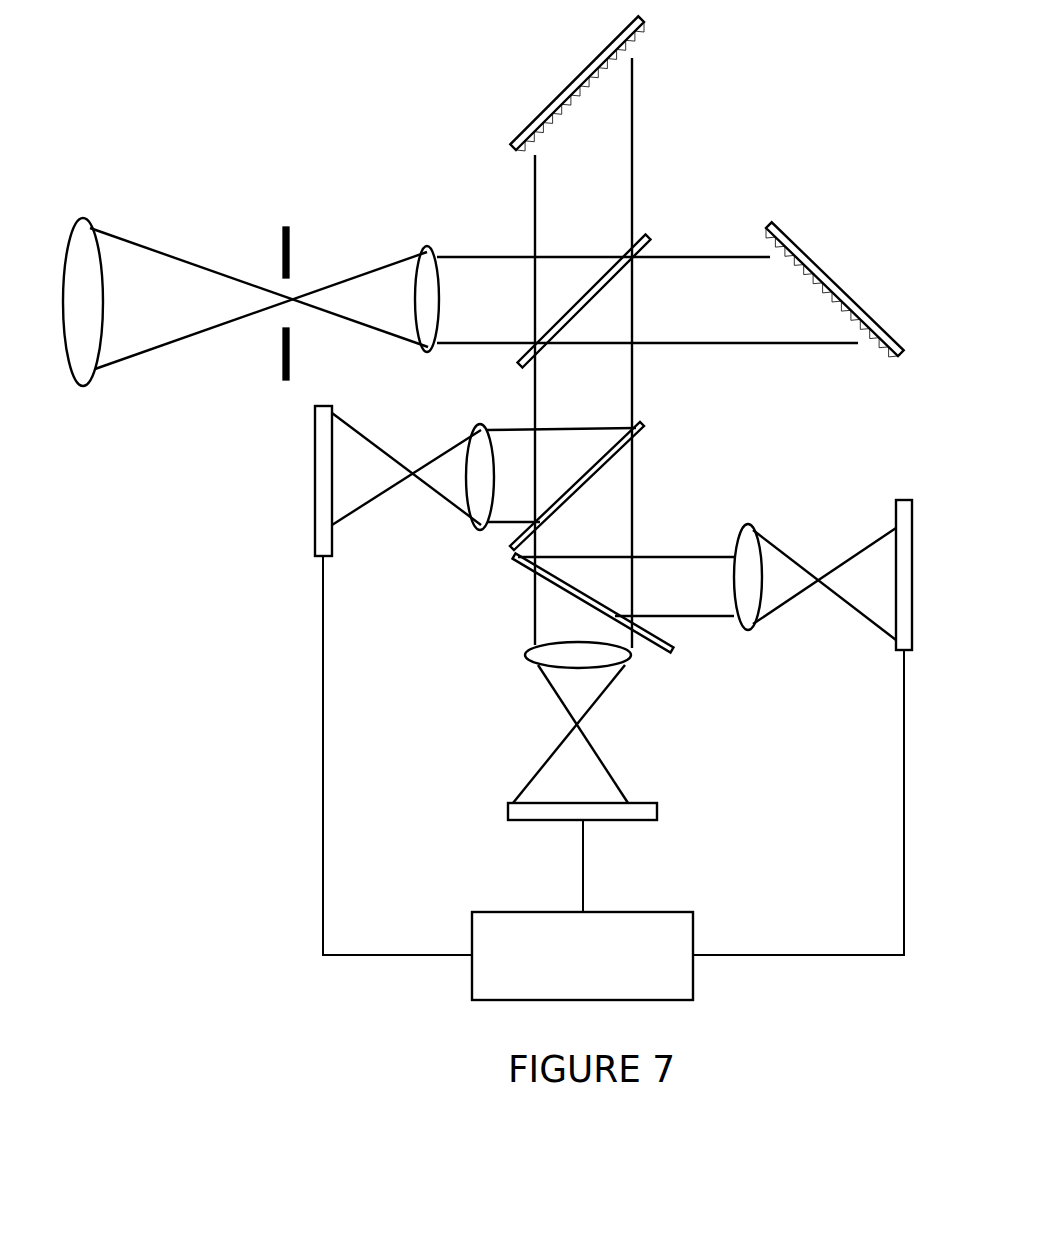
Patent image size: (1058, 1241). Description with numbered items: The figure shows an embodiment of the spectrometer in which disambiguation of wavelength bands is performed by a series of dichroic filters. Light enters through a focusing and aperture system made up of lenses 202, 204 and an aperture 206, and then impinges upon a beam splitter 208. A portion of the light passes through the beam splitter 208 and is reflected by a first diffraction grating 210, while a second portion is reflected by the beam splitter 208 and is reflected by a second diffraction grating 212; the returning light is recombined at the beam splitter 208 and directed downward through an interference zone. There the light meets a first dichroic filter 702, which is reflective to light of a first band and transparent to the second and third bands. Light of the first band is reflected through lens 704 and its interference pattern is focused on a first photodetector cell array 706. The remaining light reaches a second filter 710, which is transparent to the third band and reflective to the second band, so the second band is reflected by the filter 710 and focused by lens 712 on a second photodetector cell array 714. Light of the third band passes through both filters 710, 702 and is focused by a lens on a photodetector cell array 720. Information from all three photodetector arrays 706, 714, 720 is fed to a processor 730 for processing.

The lens 202 is at (82, 230).
The lens 204 is at (427, 257).
The aperture 206 is at (290, 238).
The beam splitter 208 is at (650, 240).
The first diffraction grating 210 is at (787, 248).
The second diffraction grating 212 is at (645, 22).
The first dichroic filter 702 is at (640, 425).
The lens 704 is at (490, 432).
The first photodetector cell array 706 is at (323, 423).
The second filter 710 is at (528, 568).
The lens 712 is at (750, 530).
The second photodetector cell array 714 is at (900, 500).
The photodetector cell array 720 is at (657, 803).
The processor 730 is at (582, 956).